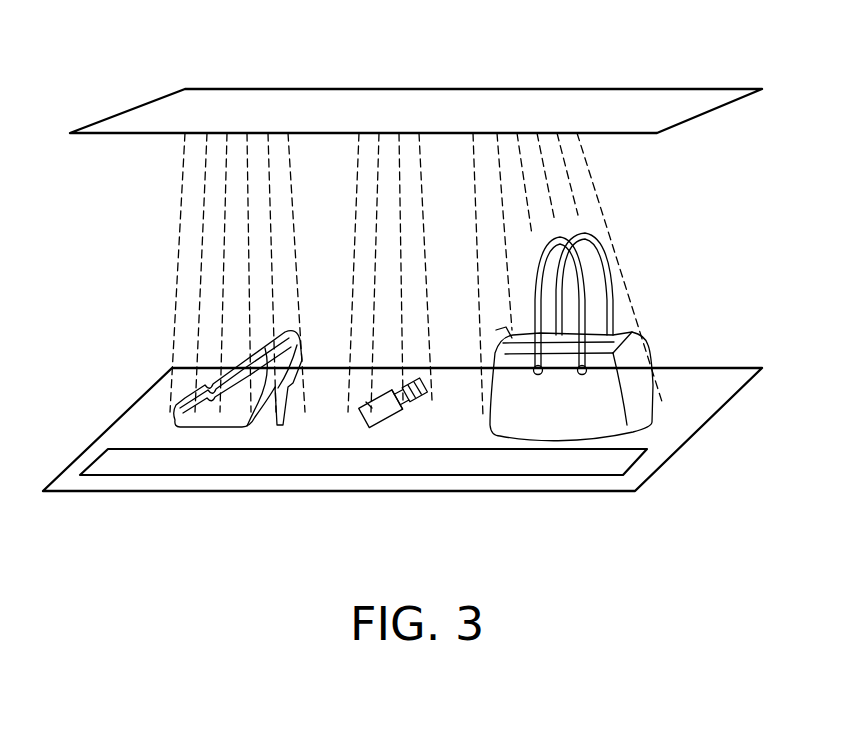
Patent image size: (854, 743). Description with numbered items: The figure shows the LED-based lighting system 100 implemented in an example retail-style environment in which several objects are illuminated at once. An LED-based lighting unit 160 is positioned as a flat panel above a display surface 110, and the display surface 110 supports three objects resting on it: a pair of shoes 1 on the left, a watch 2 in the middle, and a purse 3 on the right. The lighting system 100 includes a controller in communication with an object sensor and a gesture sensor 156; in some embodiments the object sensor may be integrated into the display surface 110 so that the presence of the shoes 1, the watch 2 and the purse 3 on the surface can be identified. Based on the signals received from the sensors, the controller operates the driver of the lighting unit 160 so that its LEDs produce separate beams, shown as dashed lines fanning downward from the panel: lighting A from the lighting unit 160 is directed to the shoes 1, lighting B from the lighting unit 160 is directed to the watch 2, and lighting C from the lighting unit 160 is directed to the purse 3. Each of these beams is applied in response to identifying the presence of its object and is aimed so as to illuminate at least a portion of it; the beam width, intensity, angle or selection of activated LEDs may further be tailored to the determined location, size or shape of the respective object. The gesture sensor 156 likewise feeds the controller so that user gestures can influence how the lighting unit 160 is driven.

The lighting system 100 is at (112, 233).
The LED-based lighting unit 160 is at (108, 122).
The display surface 110 is at (716, 378).
The gesture sensor 156 is at (105, 467).
The shoes 1 is at (224, 417).
The watch 2 is at (381, 426).
The purse 3 is at (567, 418).
The lighting A is at (193, 156).
The lighting B is at (372, 155).
The lighting C is at (575, 155).